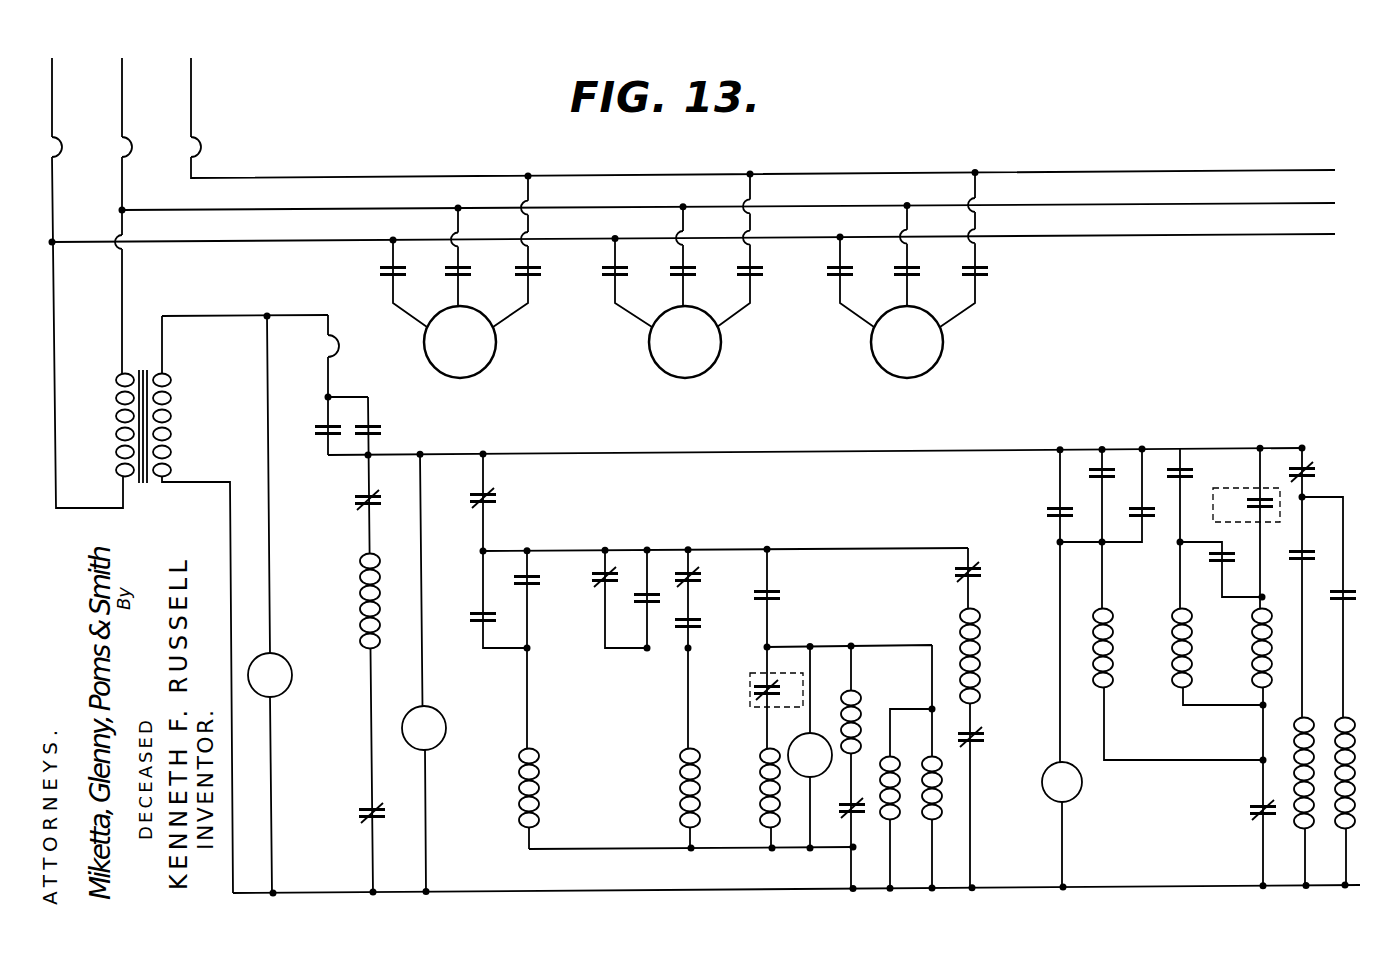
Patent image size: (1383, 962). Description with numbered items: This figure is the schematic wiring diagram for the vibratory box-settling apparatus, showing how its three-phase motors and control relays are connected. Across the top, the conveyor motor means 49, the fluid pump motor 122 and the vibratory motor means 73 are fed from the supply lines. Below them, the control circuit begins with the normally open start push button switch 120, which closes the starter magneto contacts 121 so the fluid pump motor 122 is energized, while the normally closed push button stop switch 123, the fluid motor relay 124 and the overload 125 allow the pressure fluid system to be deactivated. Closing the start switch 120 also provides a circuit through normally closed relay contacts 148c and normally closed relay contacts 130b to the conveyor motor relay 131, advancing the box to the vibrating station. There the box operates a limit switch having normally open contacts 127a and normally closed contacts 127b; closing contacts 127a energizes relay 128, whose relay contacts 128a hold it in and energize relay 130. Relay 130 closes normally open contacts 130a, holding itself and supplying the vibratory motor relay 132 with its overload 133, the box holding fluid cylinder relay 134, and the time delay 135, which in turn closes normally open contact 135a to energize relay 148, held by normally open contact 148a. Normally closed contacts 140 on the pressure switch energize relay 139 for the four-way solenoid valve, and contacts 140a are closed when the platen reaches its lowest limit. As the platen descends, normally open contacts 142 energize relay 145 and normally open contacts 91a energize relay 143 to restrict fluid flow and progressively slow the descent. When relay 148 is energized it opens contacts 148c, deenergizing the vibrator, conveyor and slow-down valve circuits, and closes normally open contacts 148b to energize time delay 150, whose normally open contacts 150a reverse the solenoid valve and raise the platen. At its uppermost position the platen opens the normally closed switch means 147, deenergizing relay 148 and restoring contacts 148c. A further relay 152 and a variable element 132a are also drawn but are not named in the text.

The motor means 49 is at (721, 358).
The motor means 73 is at (943, 358).
The fluid pump motor 122 is at (496, 358).
The start push button switch 120 is at (372, 426).
The starter magneto contacts 121 is at (325, 425).
The push button stop switch 123 is at (357, 500).
The fluid motor relay 124 is at (363, 618).
The overload 125 is at (362, 812).
The normally open contacts 127a is at (530, 584).
The normally closed contacts 127b is at (690, 574).
The relay 128 is at (523, 790).
The relay contacts 128a is at (481, 612).
The relay 130 is at (686, 788).
The normally open contacts 130a is at (650, 594).
The normally closed relay contacts 130b is at (972, 566).
The conveyor motor relay 131 is at (963, 626).
The vibratory motor relay 132 is at (856, 690).
The variable capacitor 132a is at (607, 574).
The overload 133 is at (853, 804).
The box holding fluid cylinder relay 134 is at (880, 762).
The time delay 135 is at (945, 795).
The normally open contact 135a is at (1147, 517).
The relay 139 is at (769, 790).
The normally closed contacts 140 is at (758, 695).
The normally open contacts 140a is at (1058, 509).
The normally open contacts 142 is at (1303, 552).
The relay 143 is at (1340, 730).
The relay 145 is at (1300, 742).
The normally closed switch means 147 is at (1250, 806).
The relay 148 is at (1105, 620).
The normally open contact 148a is at (1102, 468).
The normally open contacts 148b is at (1182, 470).
The normally closed relay contacts 148c is at (487, 505).
The time delay 150 is at (1180, 635).
The normally open contacts 150a is at (1242, 533).
The inductor 152 is at (1257, 665).
The normally open contacts 91a is at (1343, 610).